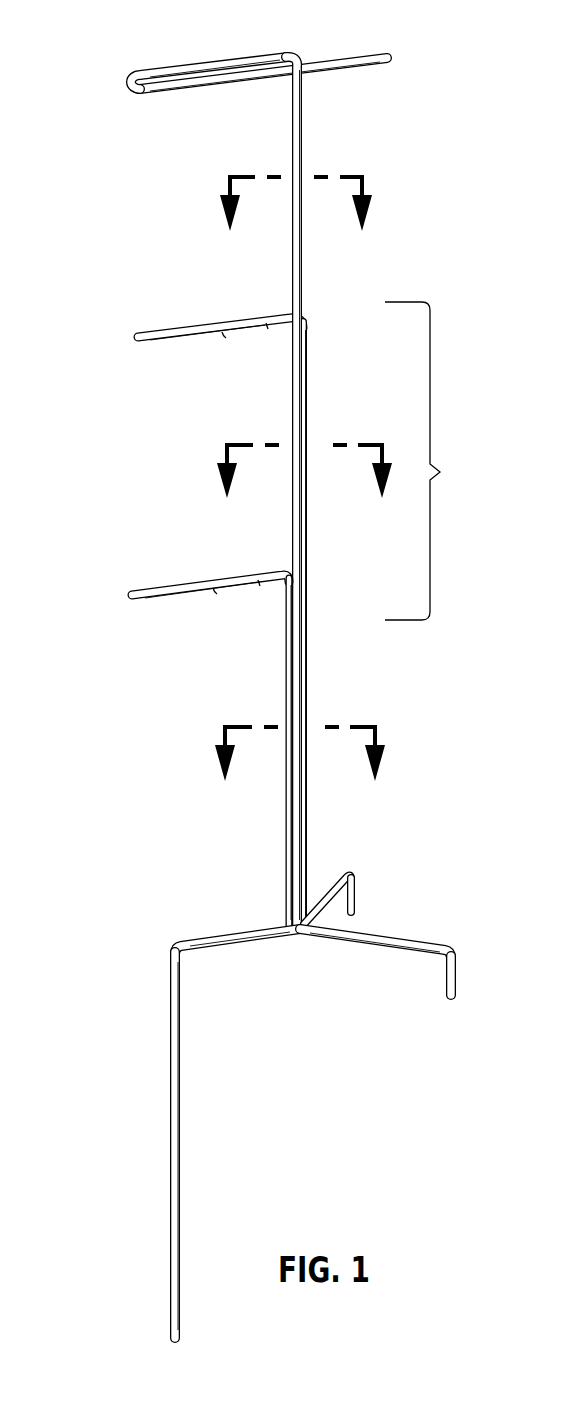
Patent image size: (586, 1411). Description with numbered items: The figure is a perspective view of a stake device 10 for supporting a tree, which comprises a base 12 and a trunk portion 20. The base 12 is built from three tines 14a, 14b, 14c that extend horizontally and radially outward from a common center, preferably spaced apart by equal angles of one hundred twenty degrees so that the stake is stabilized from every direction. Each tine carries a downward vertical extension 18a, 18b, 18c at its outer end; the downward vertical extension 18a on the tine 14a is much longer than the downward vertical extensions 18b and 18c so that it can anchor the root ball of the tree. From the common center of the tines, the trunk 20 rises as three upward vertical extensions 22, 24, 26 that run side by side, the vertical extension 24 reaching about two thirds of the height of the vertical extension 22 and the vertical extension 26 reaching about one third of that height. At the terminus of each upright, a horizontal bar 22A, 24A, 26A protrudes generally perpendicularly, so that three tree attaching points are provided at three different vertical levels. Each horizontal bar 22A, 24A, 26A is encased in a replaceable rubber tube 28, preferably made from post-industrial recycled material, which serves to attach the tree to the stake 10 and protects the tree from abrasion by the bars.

The stake device 10 is at (119, 459).
The base 12 is at (273, 1089).
The tine 14a is at (204, 937).
The tine 14b is at (331, 884).
The tine 14c is at (424, 940).
The downward vertical extension 18a is at (168, 1088).
The downward vertical extension 18b is at (357, 893).
The downward vertical extension 18c is at (457, 985).
The trunk portion 20 is at (433, 461).
The vertical extension 22 is at (304, 136).
The horizontal bar 22A is at (268, 54).
The vertical extension 24 is at (294, 397).
The horizontal bar 24A is at (279, 316).
The vertical extension 26 is at (302, 657).
The horizontal bar 26A is at (283, 572).
The rubber tube 28 is at (357, 72).